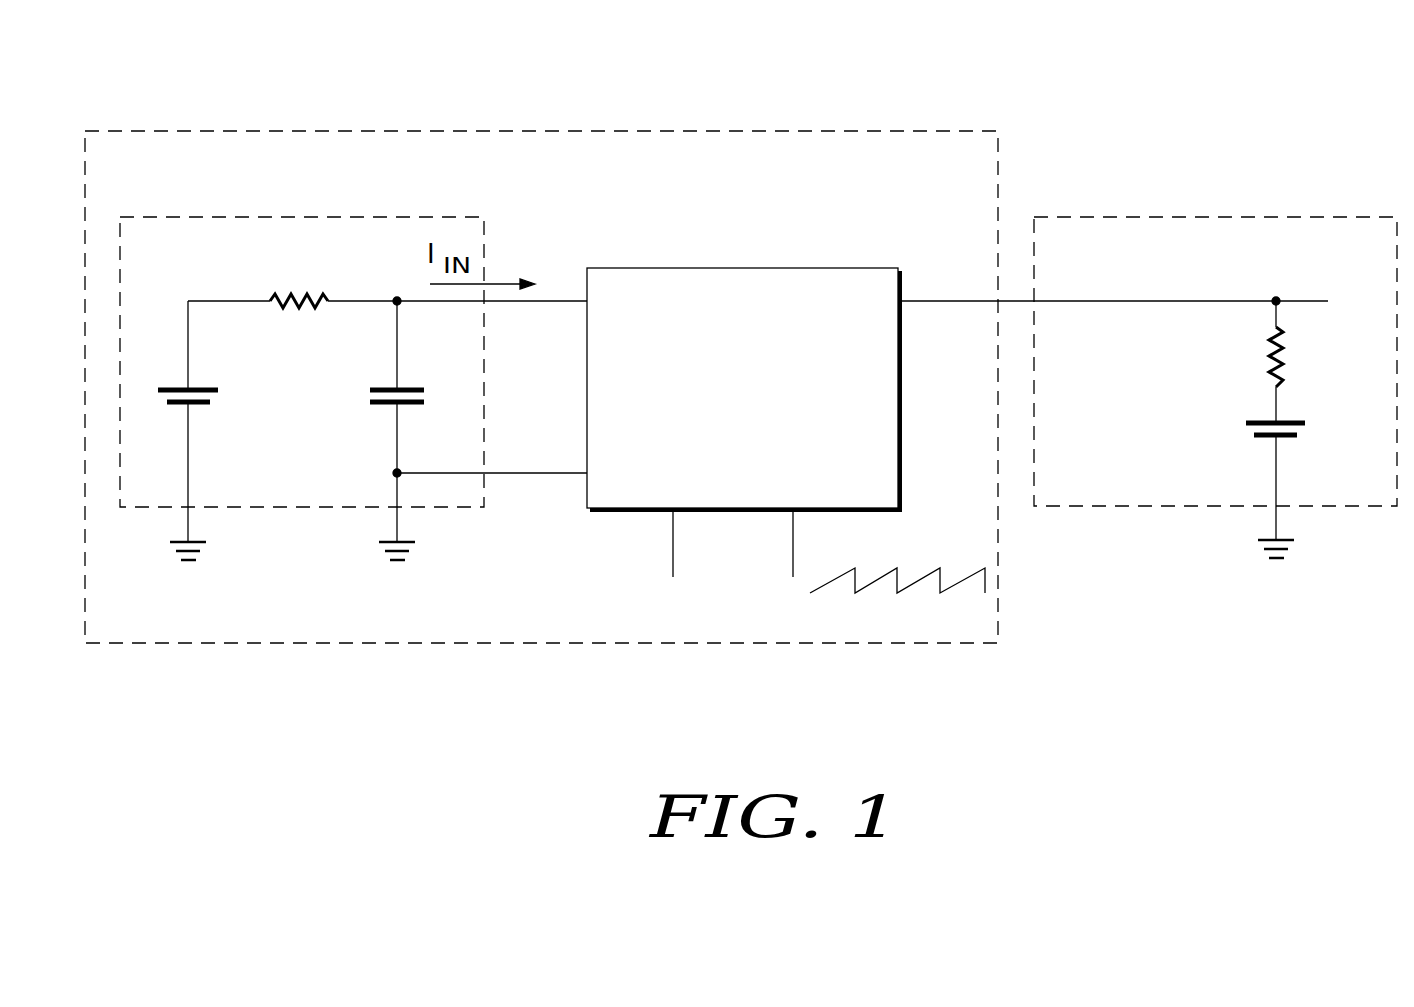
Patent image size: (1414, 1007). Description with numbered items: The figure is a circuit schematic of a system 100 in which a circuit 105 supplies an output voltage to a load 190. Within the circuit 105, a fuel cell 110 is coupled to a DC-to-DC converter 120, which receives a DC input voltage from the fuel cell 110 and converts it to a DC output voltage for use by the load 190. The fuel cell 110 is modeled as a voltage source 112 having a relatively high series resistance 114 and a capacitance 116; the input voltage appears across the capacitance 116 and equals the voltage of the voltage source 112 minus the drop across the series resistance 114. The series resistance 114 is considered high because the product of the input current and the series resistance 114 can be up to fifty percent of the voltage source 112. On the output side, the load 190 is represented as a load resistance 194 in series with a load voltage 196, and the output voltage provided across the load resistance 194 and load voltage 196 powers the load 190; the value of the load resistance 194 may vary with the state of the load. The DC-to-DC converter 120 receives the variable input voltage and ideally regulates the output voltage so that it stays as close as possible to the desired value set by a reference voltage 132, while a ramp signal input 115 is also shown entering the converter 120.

The power system 100 is at (1230, 73).
The circuit 105 is at (908, 131).
The fuel cell 110 is at (412, 217).
The voltage source 112 is at (208, 386).
The series resistance 114 is at (314, 292).
The ramp signal input 115 is at (792, 560).
The capacitance 116 is at (380, 388).
The DC-to-DC converter 120 is at (818, 268).
The reference voltage 132 is at (672, 558).
The load 190 is at (1298, 217).
The load resistance 194 is at (1268, 360).
The load voltage 196 is at (1256, 420).